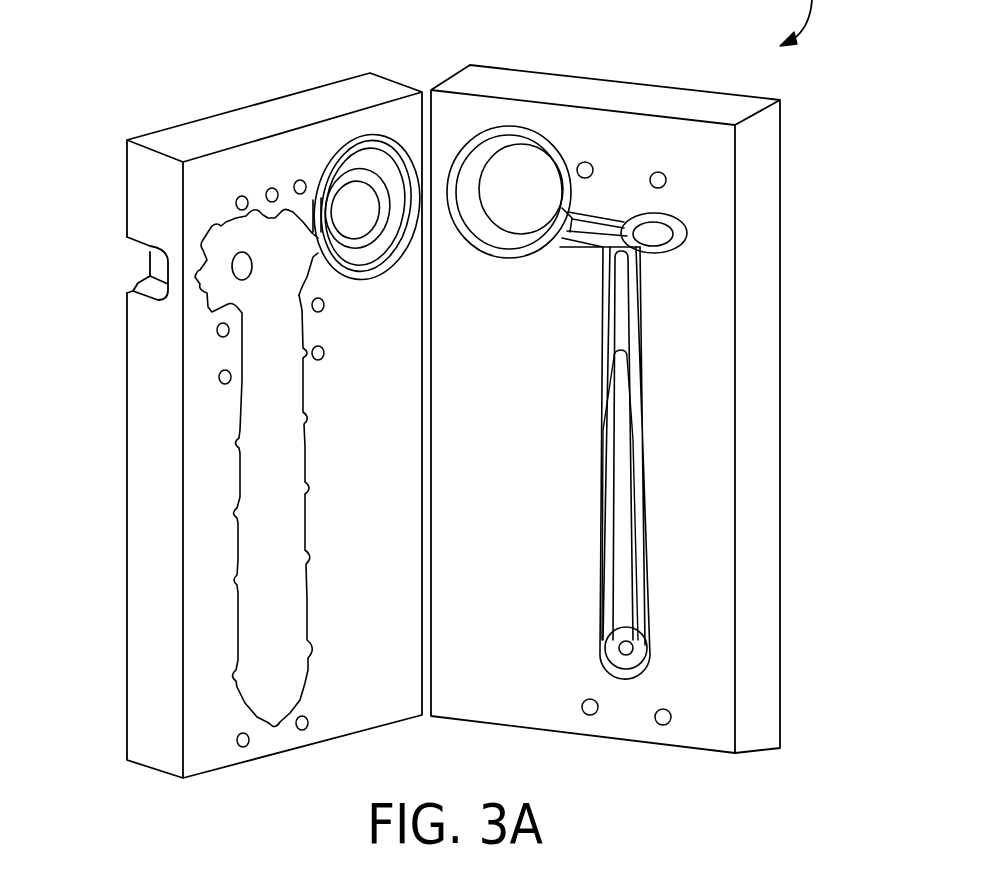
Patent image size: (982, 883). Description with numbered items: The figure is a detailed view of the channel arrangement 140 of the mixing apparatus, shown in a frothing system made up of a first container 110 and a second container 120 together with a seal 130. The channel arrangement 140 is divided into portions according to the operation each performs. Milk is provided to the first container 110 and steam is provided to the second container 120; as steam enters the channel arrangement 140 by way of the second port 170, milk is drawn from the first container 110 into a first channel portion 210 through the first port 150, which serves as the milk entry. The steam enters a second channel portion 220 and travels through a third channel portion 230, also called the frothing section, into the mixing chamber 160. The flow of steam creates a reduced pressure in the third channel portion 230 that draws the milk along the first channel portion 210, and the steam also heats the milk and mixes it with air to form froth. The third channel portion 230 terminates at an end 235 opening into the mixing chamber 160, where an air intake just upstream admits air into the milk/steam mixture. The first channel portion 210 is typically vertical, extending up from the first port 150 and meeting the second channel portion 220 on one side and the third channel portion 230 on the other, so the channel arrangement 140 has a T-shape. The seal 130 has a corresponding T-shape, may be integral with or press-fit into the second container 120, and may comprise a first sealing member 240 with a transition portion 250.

The first container 110 is at (692, 100).
The second container 120 is at (200, 137).
The seal 130 is at (269, 432).
The channel arrangement 140 is at (648, 370).
The first port 150 is at (628, 648).
The mixing chamber 160 is at (498, 163).
The second port 170 is at (240, 266).
The first channel portion 210 is at (630, 538).
The second channel portion 220 is at (663, 238).
The third channel portion 230 is at (630, 220).
The end 235 is at (568, 216).
The first sealing member 240 is at (353, 187).
The transition portion 250 is at (316, 240).